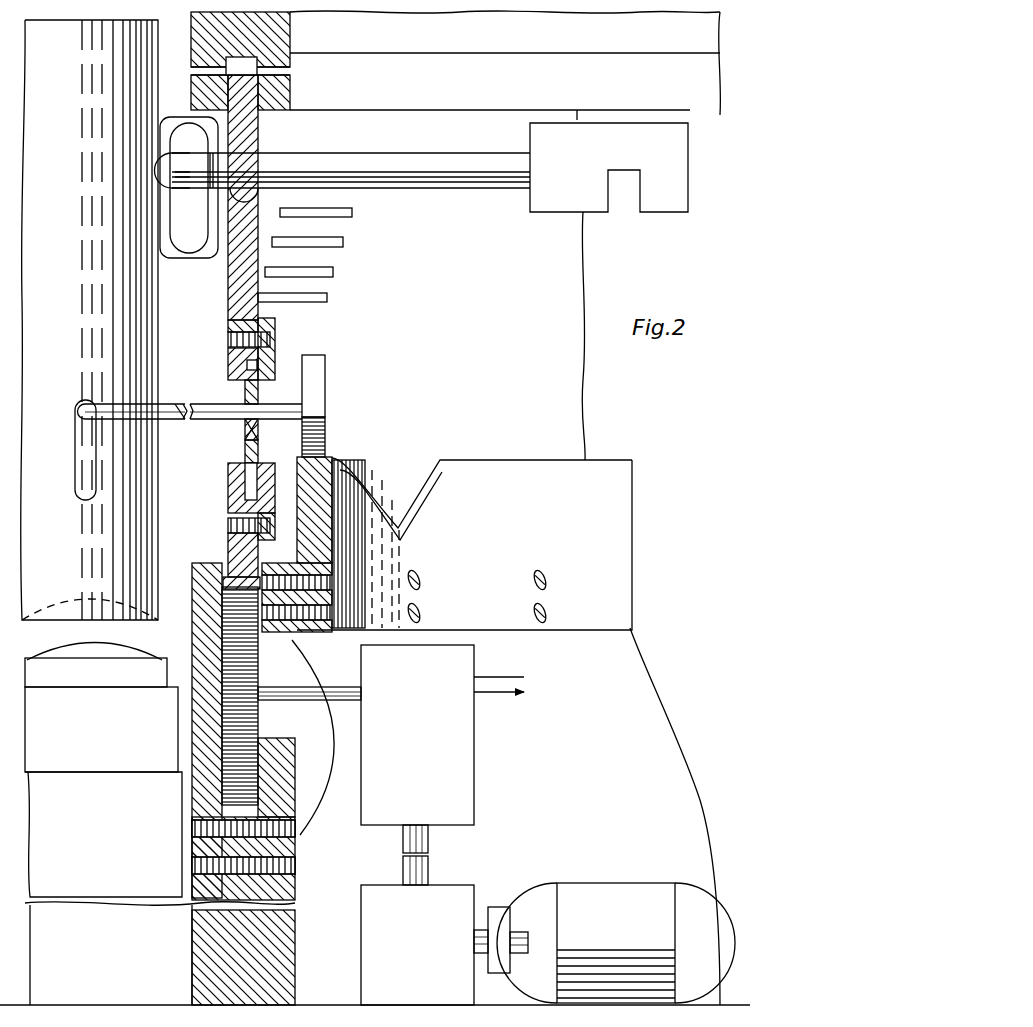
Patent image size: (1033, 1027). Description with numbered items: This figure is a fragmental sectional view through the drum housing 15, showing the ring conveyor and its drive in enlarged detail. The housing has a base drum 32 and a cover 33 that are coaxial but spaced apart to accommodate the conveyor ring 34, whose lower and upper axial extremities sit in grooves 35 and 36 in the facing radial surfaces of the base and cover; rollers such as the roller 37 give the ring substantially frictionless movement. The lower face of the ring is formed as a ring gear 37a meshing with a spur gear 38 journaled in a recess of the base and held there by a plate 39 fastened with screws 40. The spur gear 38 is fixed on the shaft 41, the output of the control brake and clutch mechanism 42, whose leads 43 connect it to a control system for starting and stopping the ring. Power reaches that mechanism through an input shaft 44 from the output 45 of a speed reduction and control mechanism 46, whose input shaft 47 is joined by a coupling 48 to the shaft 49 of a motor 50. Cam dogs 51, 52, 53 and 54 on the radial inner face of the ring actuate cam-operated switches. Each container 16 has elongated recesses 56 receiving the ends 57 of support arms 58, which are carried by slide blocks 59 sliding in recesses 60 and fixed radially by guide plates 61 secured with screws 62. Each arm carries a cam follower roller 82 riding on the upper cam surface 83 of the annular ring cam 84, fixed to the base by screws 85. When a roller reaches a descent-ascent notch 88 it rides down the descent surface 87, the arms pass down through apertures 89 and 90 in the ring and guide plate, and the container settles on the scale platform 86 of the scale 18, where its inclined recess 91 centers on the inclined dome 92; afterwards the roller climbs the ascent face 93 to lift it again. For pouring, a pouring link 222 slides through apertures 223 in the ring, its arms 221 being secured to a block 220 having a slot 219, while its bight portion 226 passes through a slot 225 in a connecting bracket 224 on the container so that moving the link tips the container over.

The drum housing 15 is at (182, 50).
The container 16 is at (62, 288).
The scale 18 is at (114, 750).
The base drum 32 is at (268, 960).
The cover 33 is at (372, 92).
The conveyor ring 34 is at (240, 283).
The groove 35 is at (230, 555).
The groove 36 is at (260, 112).
The roller 37 is at (238, 72).
The ring gear 37a is at (238, 585).
The spur gear 38 is at (238, 662).
The plate 39 is at (338, 794).
The screws 40 is at (265, 866).
The shaft 41 is at (326, 700).
The control brake and clutch mechanism 42 is at (418, 680).
The leads 43 is at (488, 695).
The input shaft 44 is at (428, 840).
The output 45 is at (428, 870).
The drive speed reduction and control mechanism 46 is at (378, 905).
The input shaft 47 is at (480, 935).
The coupling 48 is at (498, 912).
The motor shaft 49 is at (520, 952).
The motor 50 is at (612, 898).
The cam dog 51 is at (327, 297).
The cam dog 52 is at (333, 272).
The cam dog 53 is at (343, 242).
The cam dog 54 is at (352, 212).
The elongated recess 56 is at (80, 437).
The end 57 is at (100, 400).
The container support arm 58 is at (176, 419).
The slide block 59 is at (240, 448).
The recess 60 is at (247, 365).
The guide plate 61 is at (268, 368).
The screws 62 is at (275, 338).
The cam follower roller 82 is at (316, 378).
The upper cam surface 83 is at (333, 458).
The annular ring cam 84 is at (490, 605).
The screws 85 is at (546, 612).
The scale platform 86 is at (63, 668).
The descent surface 87 is at (362, 485).
The descent-ascent notch 88 is at (402, 525).
The aperture 89 is at (244, 428).
The aperture 90 is at (262, 425).
The inclined recess 91 is at (62, 600).
The inclined dome 92 is at (103, 646).
The ascent face 93 is at (418, 482).
The slot 219 is at (626, 186).
The block 220 is at (630, 156).
The arms 221 is at (440, 165).
The pouring link 222 is at (450, 190).
The aperture 223 is at (271, 176).
The connecting bracket 224 is at (165, 128).
The slot 225 is at (183, 213).
The bight portion 226 is at (178, 170).